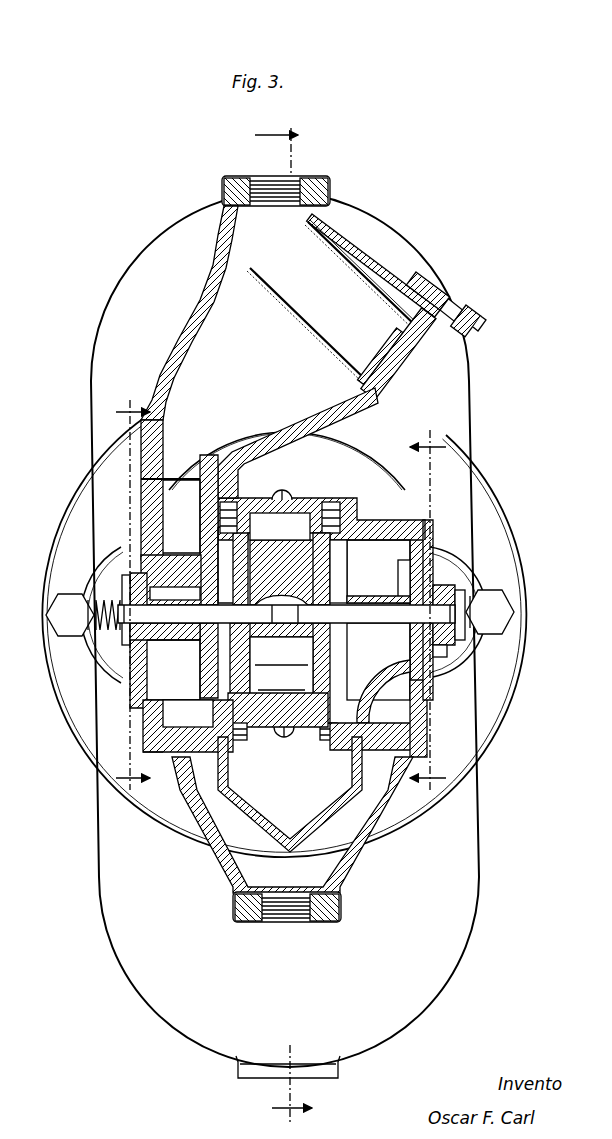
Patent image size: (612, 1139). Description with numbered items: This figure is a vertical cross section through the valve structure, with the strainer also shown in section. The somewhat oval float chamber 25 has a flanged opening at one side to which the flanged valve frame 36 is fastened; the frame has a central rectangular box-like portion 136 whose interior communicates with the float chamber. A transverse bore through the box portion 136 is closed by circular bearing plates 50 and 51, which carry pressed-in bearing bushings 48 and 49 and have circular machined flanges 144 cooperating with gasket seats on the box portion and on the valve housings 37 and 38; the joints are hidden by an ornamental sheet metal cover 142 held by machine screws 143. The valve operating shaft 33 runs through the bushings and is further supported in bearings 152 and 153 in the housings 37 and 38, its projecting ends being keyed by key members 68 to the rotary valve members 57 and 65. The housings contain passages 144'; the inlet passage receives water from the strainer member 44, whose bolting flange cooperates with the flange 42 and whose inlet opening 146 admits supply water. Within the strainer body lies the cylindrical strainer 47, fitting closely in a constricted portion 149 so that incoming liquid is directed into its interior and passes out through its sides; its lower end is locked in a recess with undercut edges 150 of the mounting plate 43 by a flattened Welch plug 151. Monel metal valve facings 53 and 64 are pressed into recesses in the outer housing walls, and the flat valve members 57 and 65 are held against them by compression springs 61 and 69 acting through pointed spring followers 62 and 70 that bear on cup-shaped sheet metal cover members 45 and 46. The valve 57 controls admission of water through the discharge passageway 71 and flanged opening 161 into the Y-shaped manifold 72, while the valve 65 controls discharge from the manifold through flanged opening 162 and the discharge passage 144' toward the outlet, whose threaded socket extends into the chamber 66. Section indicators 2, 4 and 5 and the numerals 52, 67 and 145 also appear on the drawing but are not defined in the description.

The section line 2- 2 is at (283, 624).
The section line 4- 4 is at (133, 592).
The section line 5- 5 is at (429, 616).
The float chamber 25 is at (92, 358).
The valve operating shaft 33 is at (352, 608).
The flanged valve frame 36 is at (50, 577).
The valve housing 37 is at (205, 520).
The valve housing 38 is at (380, 510).
The flange 42 is at (150, 488).
The mounting plate 43 is at (455, 352).
The strainer member 44 is at (380, 232).
The cup-shaped sheet metal cover member 45 is at (122, 575).
The cup-shaped sheet metal cover member 46 is at (440, 585).
The cylindrical strainer 47 is at (290, 300).
The bearing bushing 48 is at (262, 600).
The bearing bushing 49 is at (306, 555).
The circular bearing plate 50 is at (230, 576).
The circular bearing plate 51 is at (335, 565).
The gasket 52 is at (138, 560).
The valve facing 53 is at (140, 585).
The rotary valve member 57 is at (128, 660).
The compression spring 61 is at (66, 640).
The spring follower 62 is at (80, 617).
The valve facing 64 is at (406, 580).
The rotary valve member 65 is at (440, 560).
The chamber 66 is at (418, 520).
The bearing cap 67 is at (455, 598).
The key member 68 is at (402, 636).
The compression spring 69 is at (448, 630).
The spring follower 70 is at (480, 606).
The discharge passageway 71 is at (150, 718).
The Y-shaped manifold 72 is at (240, 866).
The box-like portion 136 is at (292, 498).
The ornamental sheet metal cover 142 is at (240, 500).
The machine screws 143 is at (284, 488).
The circular machined flanges 144 is at (306, 555).
The passages 144' is at (295, 588).
The joint 145 is at (148, 735).
The inlet opening 146 is at (285, 188).
The constricted portion 149 is at (235, 282).
The undercut edges 150 is at (474, 298).
The Welch plug 151 is at (395, 362).
The bearing 152 is at (168, 626).
The bearing 153 is at (395, 600).
The flanged opening 161 is at (244, 732).
The flanged opening 162 is at (420, 737).